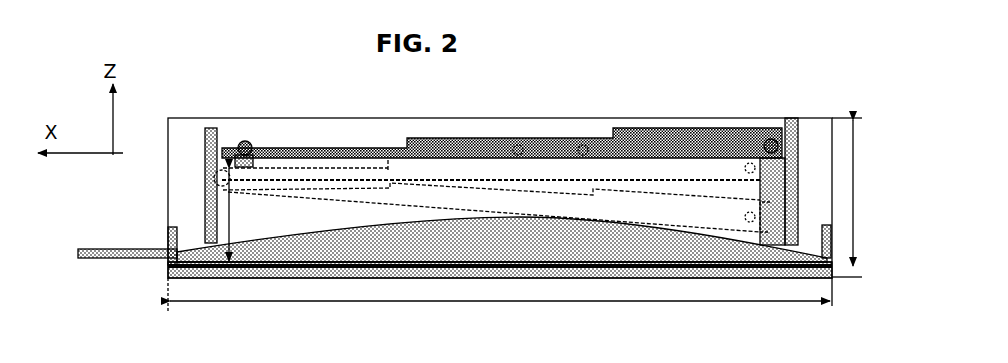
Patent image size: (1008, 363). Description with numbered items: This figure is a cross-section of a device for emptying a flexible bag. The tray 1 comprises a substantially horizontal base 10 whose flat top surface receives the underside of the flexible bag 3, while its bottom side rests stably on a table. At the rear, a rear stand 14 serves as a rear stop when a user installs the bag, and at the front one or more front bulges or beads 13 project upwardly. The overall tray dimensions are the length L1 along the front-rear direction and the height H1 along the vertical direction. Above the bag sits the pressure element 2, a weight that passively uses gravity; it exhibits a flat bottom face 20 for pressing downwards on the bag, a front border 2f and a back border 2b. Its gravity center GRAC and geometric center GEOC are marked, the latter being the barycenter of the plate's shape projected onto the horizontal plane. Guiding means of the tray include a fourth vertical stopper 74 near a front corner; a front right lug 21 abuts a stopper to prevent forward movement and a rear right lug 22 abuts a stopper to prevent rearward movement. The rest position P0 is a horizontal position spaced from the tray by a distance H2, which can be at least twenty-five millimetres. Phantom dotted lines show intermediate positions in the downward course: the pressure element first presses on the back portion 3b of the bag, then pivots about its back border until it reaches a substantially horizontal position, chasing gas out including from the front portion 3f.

The tray 1 is at (666, 281).
The pressure element 2 is at (684, 123).
The front border 2f is at (217, 150).
The back border 2b is at (797, 138).
The flexible bag 3 is at (502, 239).
The front portion of the bag 3f is at (268, 240).
The back portion of the bag 3b is at (723, 240).
The base 10 is at (527, 254).
The front bulge or bead 13 is at (168, 235).
The rear stand 14 is at (822, 226).
The flat bottom face 20 is at (659, 172).
The front right lug 21 is at (770, 140).
The rear right lug 22 is at (248, 147).
The fourth vertical stopper 74 is at (213, 132).
The rest position P0 is at (360, 147).
The geometric center GEOC is at (517, 146).
The gravity center GRAC is at (583, 146).
The height H1 is at (861, 197).
The distance H2 is at (243, 214).
The length L1 is at (500, 303).